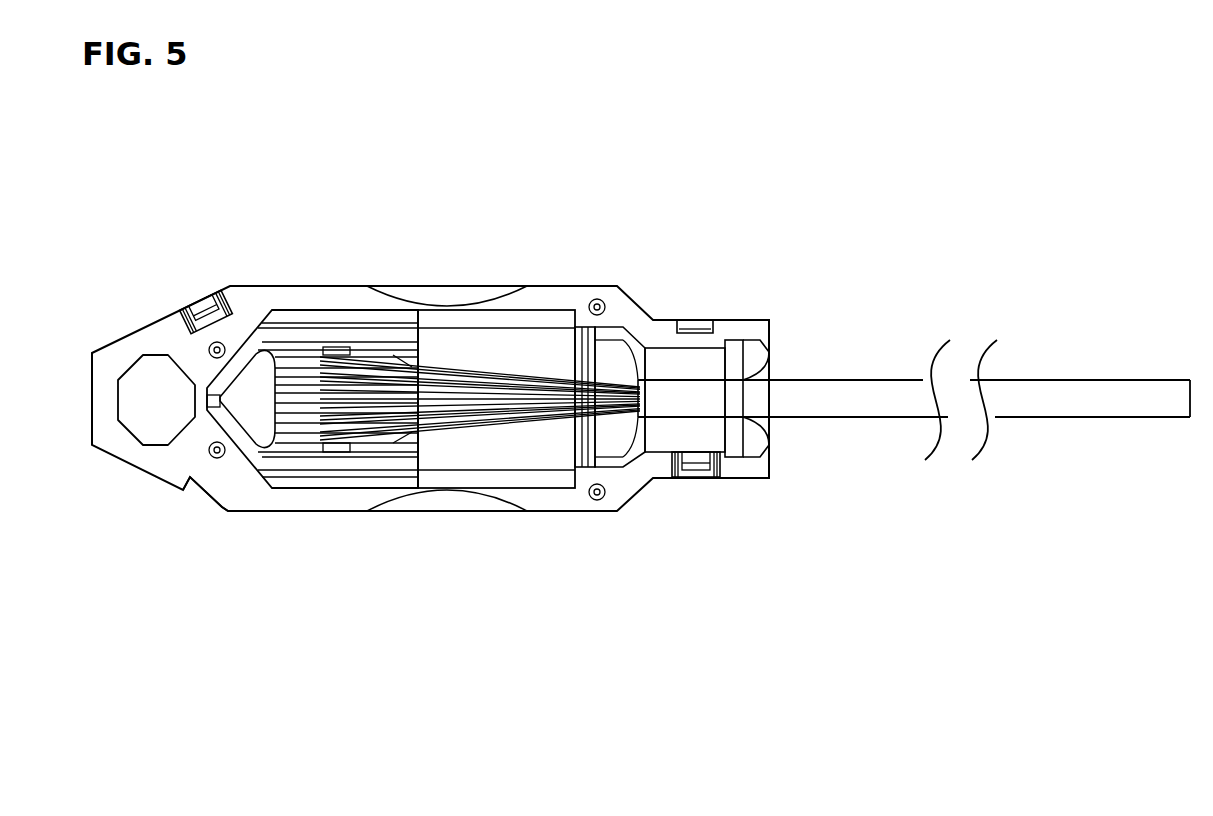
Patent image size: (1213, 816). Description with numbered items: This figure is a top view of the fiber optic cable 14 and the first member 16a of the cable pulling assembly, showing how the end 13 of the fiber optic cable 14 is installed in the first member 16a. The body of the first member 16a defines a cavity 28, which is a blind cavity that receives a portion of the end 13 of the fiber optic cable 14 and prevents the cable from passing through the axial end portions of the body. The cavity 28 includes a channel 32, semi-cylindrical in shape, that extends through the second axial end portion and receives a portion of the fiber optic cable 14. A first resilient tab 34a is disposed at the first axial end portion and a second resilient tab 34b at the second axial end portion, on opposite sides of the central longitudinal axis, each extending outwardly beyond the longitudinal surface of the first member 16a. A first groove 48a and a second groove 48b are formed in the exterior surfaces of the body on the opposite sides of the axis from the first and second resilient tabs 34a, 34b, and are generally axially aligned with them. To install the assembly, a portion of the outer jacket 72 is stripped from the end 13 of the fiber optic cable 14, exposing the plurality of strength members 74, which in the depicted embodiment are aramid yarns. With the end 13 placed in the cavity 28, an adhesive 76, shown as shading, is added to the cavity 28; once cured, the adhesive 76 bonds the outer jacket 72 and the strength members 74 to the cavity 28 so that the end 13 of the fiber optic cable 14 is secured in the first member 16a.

The end of the fiber optic cable 13 is at (683, 416).
The fiber optic cable 14 is at (1085, 367).
The first member 16a is at (306, 272).
The cavity 28 is at (541, 342).
The channel 32 is at (706, 367).
The first resilient tab 34a is at (189, 281).
The second resilient tab 34b is at (687, 491).
The first groove 48a is at (207, 491).
The second groove 48b is at (703, 320).
The outer jacket 72 is at (650, 380).
The strength member 74 is at (438, 429).
The adhesive 76 is at (531, 458).